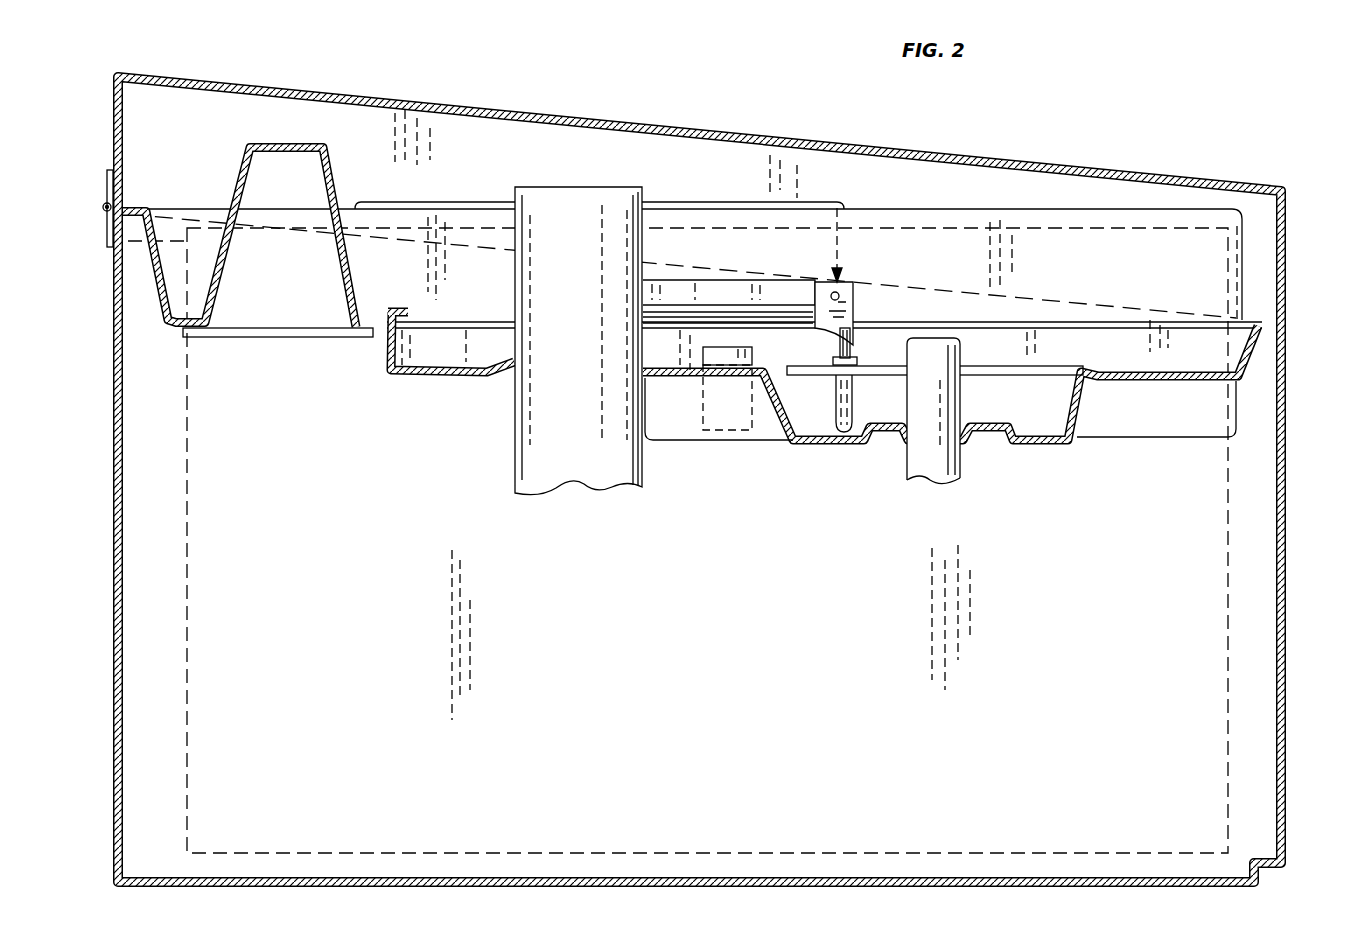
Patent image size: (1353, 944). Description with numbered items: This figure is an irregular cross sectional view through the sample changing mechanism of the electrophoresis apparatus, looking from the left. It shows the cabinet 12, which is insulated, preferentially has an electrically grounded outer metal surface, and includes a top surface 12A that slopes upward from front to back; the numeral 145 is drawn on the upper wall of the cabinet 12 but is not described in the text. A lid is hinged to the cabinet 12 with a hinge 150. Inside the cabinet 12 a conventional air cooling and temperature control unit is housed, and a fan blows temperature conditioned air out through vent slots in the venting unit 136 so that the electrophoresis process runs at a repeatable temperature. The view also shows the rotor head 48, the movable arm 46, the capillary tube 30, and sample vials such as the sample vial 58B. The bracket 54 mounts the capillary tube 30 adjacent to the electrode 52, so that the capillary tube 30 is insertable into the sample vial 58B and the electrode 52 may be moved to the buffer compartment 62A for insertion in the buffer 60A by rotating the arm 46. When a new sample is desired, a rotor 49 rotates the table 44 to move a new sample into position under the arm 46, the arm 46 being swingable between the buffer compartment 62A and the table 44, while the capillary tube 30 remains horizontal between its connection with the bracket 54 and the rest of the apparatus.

The cabinet 12 is at (1288, 452).
The top surface 12A is at (1127, 303).
The venting unit 136 is at (283, 146).
The top wall 145 is at (932, 150).
The hinge 150 is at (103, 207).
The rotor head 48 is at (571, 206).
The movable arm 46 is at (788, 290).
The bracket 54 is at (850, 293).
The electrode 52 is at (838, 350).
The capillary tube 30 is at (851, 357).
The table 44 is at (1040, 366).
The buffer 60A is at (712, 352).
The buffer compartment 62A is at (733, 362).
The sample vial 58B is at (840, 413).
The rotor 49 is at (947, 460).